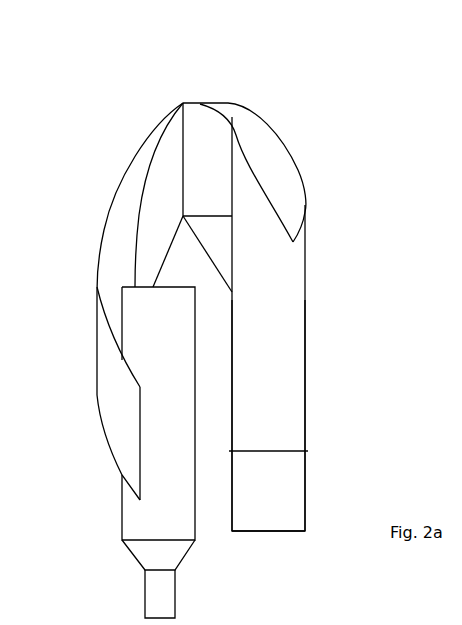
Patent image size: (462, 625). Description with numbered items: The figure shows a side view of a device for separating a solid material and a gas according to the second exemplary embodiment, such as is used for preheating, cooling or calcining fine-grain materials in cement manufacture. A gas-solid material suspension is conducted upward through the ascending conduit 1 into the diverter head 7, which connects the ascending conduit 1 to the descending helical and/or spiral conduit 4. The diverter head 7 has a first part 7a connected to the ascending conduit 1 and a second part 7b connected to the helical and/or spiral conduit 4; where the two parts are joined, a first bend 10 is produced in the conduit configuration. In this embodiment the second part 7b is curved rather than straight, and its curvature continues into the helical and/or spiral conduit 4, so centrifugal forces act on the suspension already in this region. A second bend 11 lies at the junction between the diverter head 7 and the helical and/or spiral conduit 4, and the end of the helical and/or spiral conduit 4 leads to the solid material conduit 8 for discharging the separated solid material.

The ascending conduit 1 is at (277, 501).
The helical and/or spiral conduit 4 is at (135, 210).
The diverter head 7 is at (298, 127).
The first part of the diverter head 7a is at (278, 358).
The second part of the diverter head 7b is at (250, 117).
The solid material conduit 8 is at (163, 601).
The first bend 10 is at (242, 287).
The second bend 11 is at (181, 101).